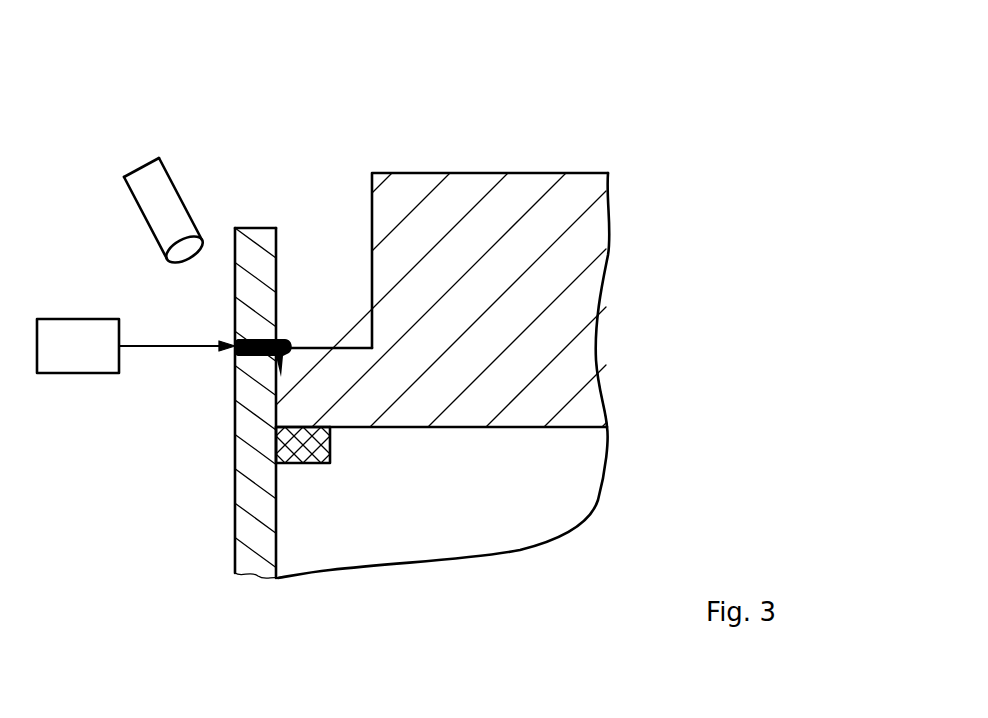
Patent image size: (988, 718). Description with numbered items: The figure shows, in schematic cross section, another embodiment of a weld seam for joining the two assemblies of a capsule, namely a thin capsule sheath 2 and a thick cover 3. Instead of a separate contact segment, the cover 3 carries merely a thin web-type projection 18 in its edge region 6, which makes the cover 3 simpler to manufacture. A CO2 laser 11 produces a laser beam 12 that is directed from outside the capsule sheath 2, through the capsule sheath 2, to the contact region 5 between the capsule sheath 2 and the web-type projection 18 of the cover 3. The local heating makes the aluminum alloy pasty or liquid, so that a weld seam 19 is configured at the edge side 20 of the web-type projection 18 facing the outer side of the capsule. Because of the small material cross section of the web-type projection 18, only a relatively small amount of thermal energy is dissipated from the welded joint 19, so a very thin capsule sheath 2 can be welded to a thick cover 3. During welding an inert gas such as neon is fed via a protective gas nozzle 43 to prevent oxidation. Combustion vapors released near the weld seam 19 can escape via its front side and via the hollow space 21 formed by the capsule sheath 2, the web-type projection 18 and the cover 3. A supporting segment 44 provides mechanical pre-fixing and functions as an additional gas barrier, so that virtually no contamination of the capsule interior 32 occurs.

The capsule sheath 2 is at (254, 502).
The cover 3 is at (598, 265).
The contact region 5 is at (265, 401).
The edge region 6 is at (362, 158).
The CO2 laser 11 is at (93, 355).
The laser beam 12 is at (177, 343).
The web-type projection 18 is at (588, 135).
The weld seam 19 is at (235, 353).
The edge side 20 is at (287, 320).
The hollow space 21 is at (347, 323).
The capsule interior 32 is at (497, 518).
The protective gas nozzle 43 is at (150, 168).
The supporting segment 44 is at (313, 466).